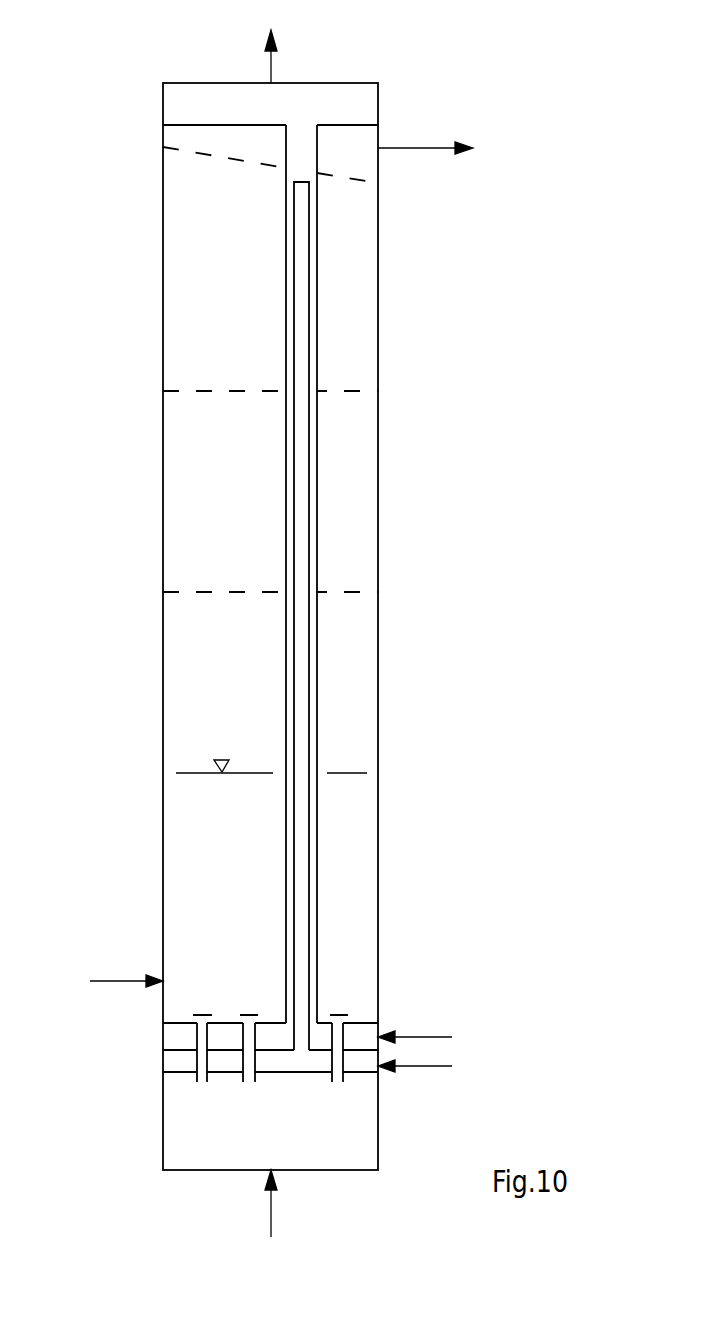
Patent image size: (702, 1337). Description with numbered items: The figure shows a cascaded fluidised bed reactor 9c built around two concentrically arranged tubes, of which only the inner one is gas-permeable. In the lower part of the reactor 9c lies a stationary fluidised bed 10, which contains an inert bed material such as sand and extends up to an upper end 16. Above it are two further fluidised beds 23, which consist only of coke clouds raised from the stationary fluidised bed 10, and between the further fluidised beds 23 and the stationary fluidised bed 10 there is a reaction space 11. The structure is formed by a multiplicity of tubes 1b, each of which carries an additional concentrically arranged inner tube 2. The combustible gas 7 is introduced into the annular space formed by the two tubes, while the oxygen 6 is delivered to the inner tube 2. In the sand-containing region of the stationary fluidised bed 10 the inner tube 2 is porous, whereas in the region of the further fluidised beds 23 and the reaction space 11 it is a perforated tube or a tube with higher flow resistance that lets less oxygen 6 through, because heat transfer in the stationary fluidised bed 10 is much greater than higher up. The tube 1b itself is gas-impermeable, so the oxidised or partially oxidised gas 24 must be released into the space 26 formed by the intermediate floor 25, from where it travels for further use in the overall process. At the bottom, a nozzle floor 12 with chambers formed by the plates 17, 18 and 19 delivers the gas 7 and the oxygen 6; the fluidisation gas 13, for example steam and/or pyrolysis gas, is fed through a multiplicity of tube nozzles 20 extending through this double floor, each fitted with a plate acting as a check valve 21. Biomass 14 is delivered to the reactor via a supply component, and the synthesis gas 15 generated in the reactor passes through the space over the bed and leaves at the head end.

The cascaded fluidised bed reactor 9c is at (437, 561).
The space 26 is at (196, 97).
The intermediate floor 25 is at (190, 124).
The oxidised or partially oxidised gas 24 is at (285, 56).
The synthesis gas 15 is at (425, 138).
The tube 1b is at (318, 885).
The inner tube 2 is at (302, 922).
The nozzle floor 12 is at (207, 153).
The further fluidised beds 23 is at (363, 302).
The reaction space 11 is at (362, 667).
The upper end 16 is at (350, 773).
The stationary fluidised bed 10 is at (362, 812).
The biomass 14 is at (126, 971).
The plate 18 is at (184, 1025).
The plate 19 is at (177, 1052).
The plate 17 is at (275, 1073).
The tube nozzles 20 is at (202, 1082).
The check valve 21 is at (204, 1014).
The oxidised or partially oxidised gas 7 is at (423, 1037).
The oxygen 6 is at (423, 1066).
The fluidisation gas 13 is at (280, 1205).